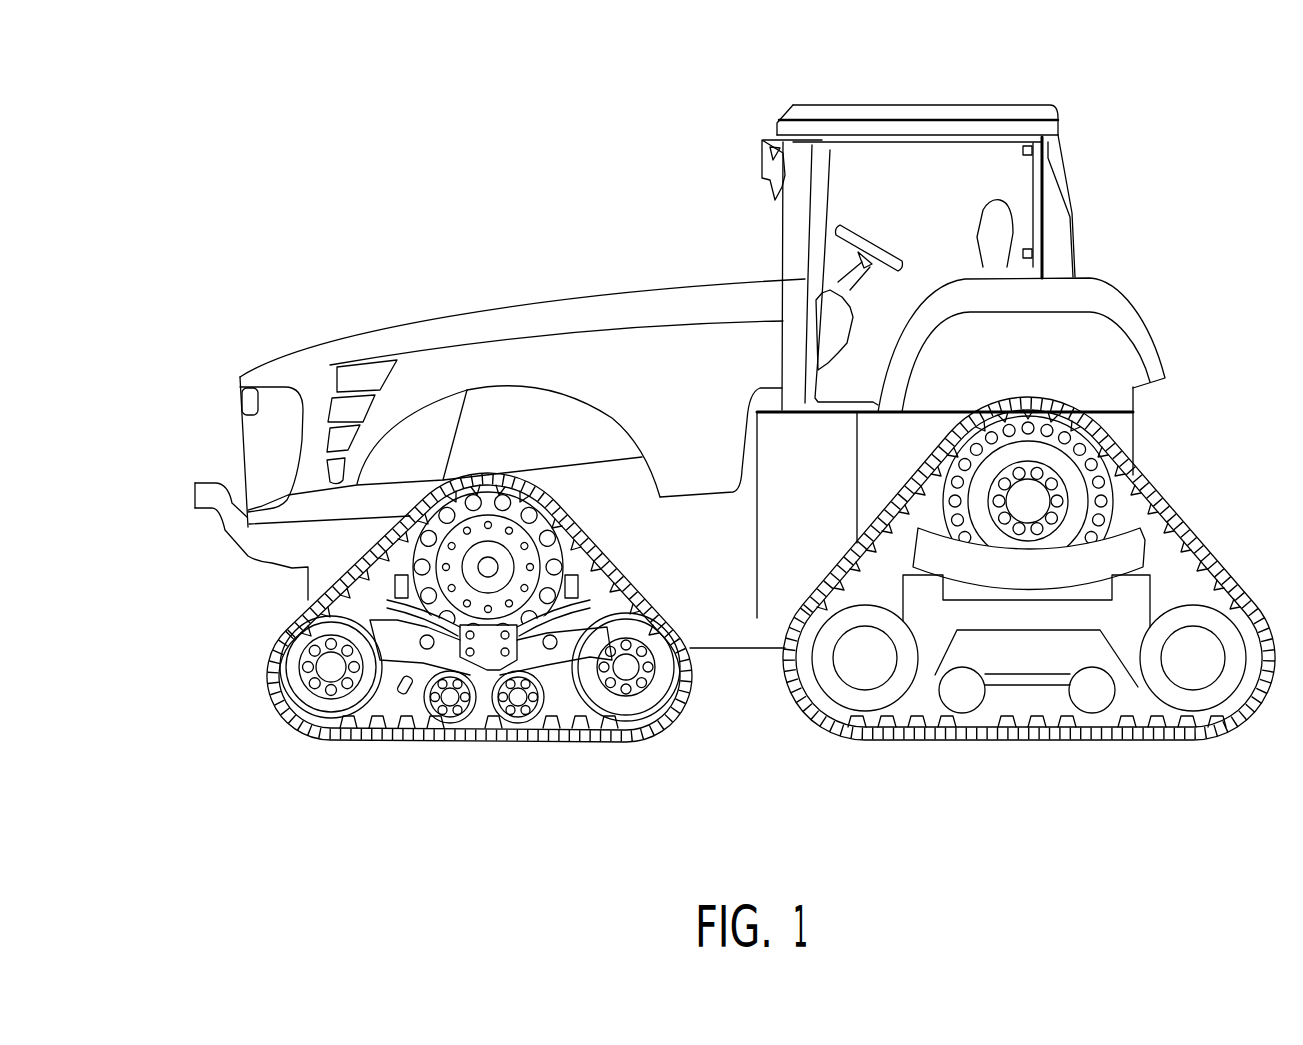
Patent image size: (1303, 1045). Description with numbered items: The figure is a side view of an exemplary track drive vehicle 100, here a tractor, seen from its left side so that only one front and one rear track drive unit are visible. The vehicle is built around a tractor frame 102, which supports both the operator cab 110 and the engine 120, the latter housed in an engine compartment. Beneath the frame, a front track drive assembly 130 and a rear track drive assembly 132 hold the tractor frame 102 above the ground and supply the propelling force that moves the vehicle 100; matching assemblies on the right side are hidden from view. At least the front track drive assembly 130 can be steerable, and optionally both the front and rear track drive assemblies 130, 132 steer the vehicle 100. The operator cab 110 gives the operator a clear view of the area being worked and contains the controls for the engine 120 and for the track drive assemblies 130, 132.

The track drive vehicle 100 is at (372, 107).
The tractor frame 102 is at (623, 477).
The operator cab 110 is at (923, 103).
The engine 120 is at (547, 317).
The front track drive assembly 130 is at (276, 752).
The rear track drive assembly 132 is at (1055, 760).